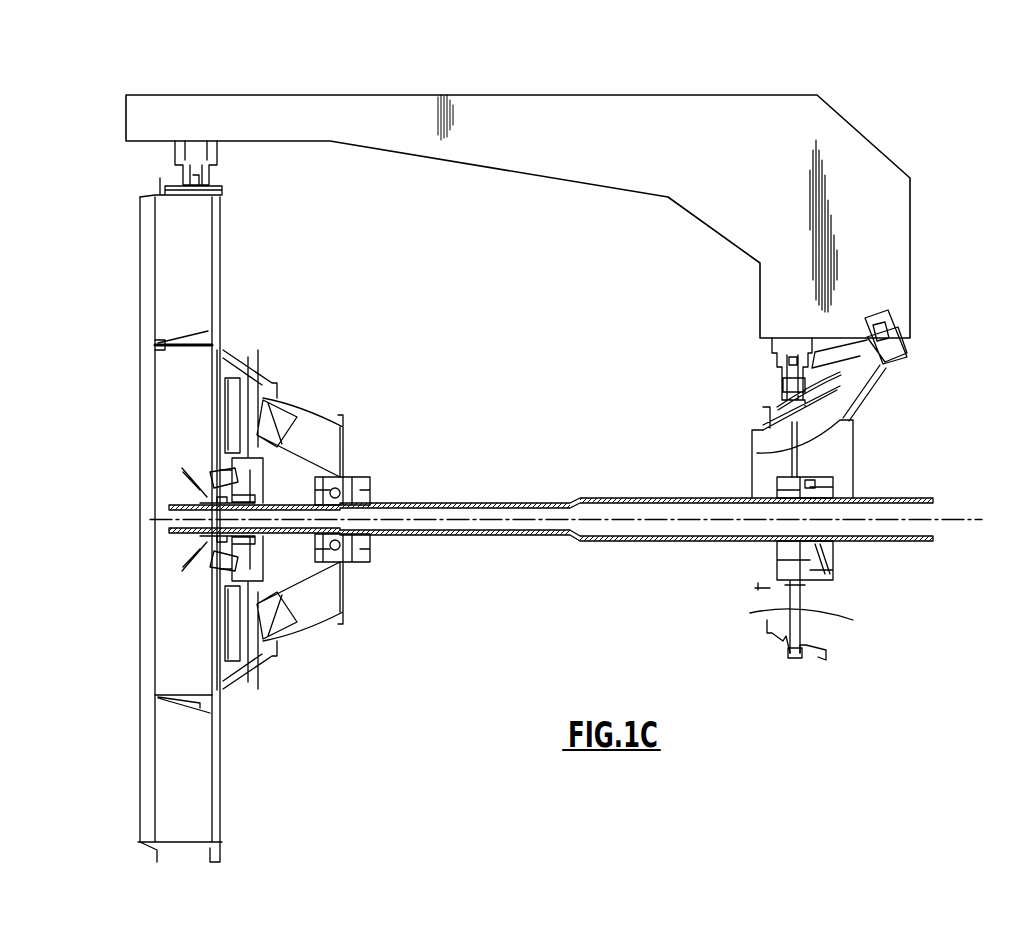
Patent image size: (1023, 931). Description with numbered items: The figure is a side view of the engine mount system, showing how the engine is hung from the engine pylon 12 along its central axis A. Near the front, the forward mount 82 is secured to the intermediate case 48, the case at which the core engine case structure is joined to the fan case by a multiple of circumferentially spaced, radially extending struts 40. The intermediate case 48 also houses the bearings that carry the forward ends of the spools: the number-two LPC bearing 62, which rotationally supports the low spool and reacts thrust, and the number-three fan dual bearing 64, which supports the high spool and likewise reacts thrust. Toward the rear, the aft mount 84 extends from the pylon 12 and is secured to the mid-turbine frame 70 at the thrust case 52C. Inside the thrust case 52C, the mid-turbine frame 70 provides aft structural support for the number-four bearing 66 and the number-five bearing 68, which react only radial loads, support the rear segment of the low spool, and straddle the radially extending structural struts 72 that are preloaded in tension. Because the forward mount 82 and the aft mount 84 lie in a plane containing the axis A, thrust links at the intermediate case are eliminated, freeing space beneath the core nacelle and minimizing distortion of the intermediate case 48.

The engine pylon 12 is at (649, 124).
The forward mount 82 is at (165, 167).
The struts 40 is at (190, 268).
The intermediate case 48 is at (253, 358).
The #2 LPC bearing 62 is at (215, 553).
The #3 fan dual bearing 64 is at (345, 555).
The #4 bearing 66 is at (785, 492).
The #5 bearing 68 is at (792, 468).
The mid-turbine frame 70 is at (743, 472).
The structural struts 72 is at (797, 427).
The aft mount 84 is at (893, 375).
The thrust case 52C is at (778, 405).
The axis A is at (968, 521).